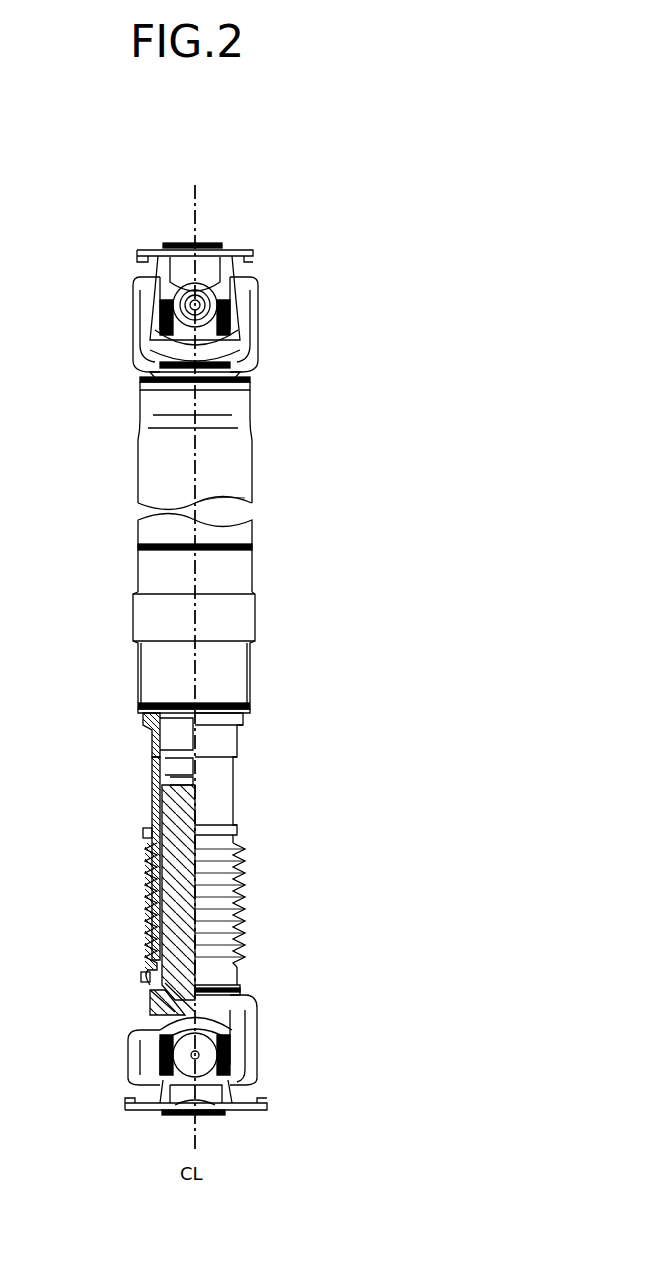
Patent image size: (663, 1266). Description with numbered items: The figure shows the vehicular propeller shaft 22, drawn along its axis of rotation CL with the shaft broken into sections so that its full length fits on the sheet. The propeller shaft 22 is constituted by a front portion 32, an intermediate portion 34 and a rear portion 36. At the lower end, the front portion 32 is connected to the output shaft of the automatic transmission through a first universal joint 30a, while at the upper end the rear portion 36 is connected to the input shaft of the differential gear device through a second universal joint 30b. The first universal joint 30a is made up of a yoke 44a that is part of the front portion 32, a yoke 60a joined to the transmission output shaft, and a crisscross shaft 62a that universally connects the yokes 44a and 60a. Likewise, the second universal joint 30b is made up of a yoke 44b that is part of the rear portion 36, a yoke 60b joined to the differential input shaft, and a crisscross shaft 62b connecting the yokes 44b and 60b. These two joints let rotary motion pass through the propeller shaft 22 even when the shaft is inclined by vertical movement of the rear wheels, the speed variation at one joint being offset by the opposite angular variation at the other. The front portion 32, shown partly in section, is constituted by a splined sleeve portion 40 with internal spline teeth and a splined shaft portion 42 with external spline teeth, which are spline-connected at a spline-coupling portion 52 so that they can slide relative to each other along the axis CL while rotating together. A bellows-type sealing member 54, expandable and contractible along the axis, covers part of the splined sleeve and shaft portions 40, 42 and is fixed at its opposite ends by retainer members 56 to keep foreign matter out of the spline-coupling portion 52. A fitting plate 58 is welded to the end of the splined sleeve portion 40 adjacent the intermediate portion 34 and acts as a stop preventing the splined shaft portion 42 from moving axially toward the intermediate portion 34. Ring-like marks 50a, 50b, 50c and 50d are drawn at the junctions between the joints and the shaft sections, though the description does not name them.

The propeller shaft 22 is at (255, 195).
The first universal joint 30a is at (328, 1050).
The second universal joint 30b is at (326, 283).
The front portion 32 is at (308, 801).
The intermediate portion 34 is at (306, 616).
The rear portion 36 is at (306, 461).
The splined sleeve portion 40 is at (152, 771).
The splined shaft portion 42 is at (147, 999).
The yoke 44a is at (130, 1071).
The yoke 44b is at (137, 291).
The weld portion 50a is at (238, 989).
The weld portion 50b is at (250, 706).
The weld portion 50c is at (250, 547).
The weld portion 50d is at (250, 388).
The spline-coupling portion 52 is at (157, 797).
The bellows-type sealing member 54 is at (245, 918).
The retainer members 56 is at (143, 834).
The fitting plate 58 is at (150, 735).
The yoke 60a is at (128, 1111).
The yoke 60b is at (150, 252).
The crisscross shaft 62a is at (198, 1058).
The crisscross shaft 62b is at (200, 307).